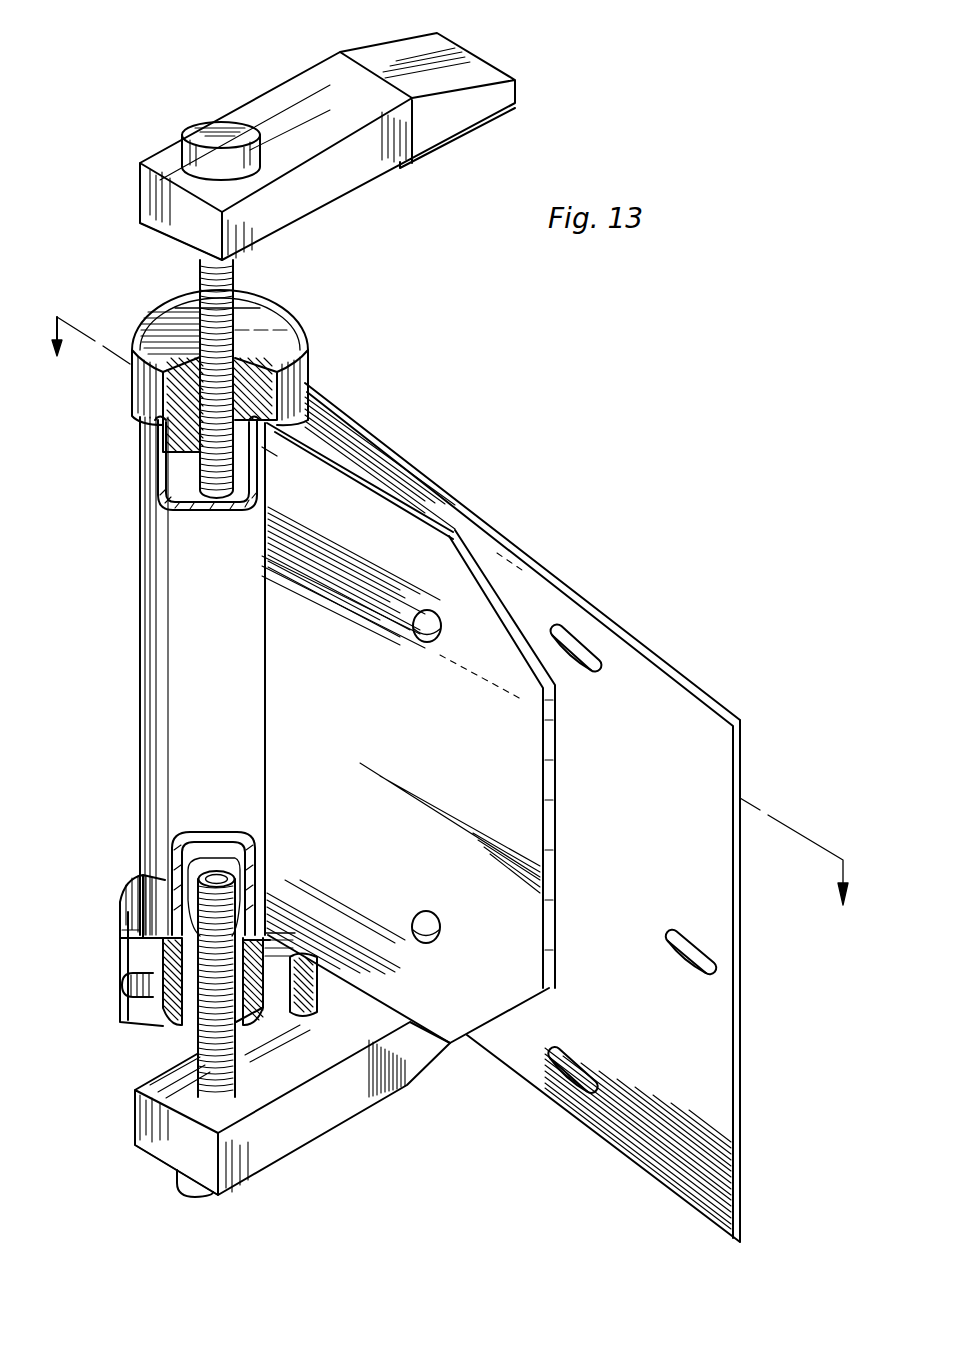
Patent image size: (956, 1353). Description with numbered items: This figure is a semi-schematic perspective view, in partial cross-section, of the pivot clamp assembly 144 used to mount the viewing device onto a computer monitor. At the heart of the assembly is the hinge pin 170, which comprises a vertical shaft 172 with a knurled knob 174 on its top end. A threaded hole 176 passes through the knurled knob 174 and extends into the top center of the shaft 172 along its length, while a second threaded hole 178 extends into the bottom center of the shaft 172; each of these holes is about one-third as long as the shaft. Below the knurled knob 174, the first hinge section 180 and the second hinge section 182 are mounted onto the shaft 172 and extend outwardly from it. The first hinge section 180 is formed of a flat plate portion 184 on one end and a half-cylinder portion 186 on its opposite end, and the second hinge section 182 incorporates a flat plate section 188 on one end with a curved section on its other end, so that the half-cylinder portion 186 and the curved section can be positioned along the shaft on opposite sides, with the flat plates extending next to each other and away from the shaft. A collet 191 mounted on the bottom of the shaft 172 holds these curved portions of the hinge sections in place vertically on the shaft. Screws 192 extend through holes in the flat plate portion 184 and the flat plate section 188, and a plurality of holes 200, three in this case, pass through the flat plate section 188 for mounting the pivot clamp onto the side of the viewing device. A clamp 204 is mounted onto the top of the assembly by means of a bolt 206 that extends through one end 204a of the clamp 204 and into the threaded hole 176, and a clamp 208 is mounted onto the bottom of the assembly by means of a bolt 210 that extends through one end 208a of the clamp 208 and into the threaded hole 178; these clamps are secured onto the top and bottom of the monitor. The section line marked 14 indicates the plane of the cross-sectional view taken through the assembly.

The section line 14- 14 is at (446, 633).
The pivot clamp assembly 144 is at (592, 388).
The hinge pin 170 is at (310, 313).
The shaft 172 is at (160, 481).
The knurled knob 174 is at (310, 352).
The threaded hole 176 is at (200, 313).
The threaded hole 178 is at (283, 925).
The first hinge section 180 is at (176, 705).
The second hinge section 182 is at (676, 1157).
The flat plate portion 184 is at (412, 757).
The half-cylinder portion 186 is at (178, 628).
The flat plate section 188 is at (668, 824).
The collet 191 is at (120, 940).
The screws 192 is at (428, 643).
The holes 200 is at (572, 643).
The clamp 204 is at (307, 68).
The end of clamp 204a is at (138, 190).
The bolt 206 is at (236, 277).
The clamp 208 is at (357, 1115).
The end of clamp 208a is at (175, 1153).
The bolt 210 is at (200, 1012).